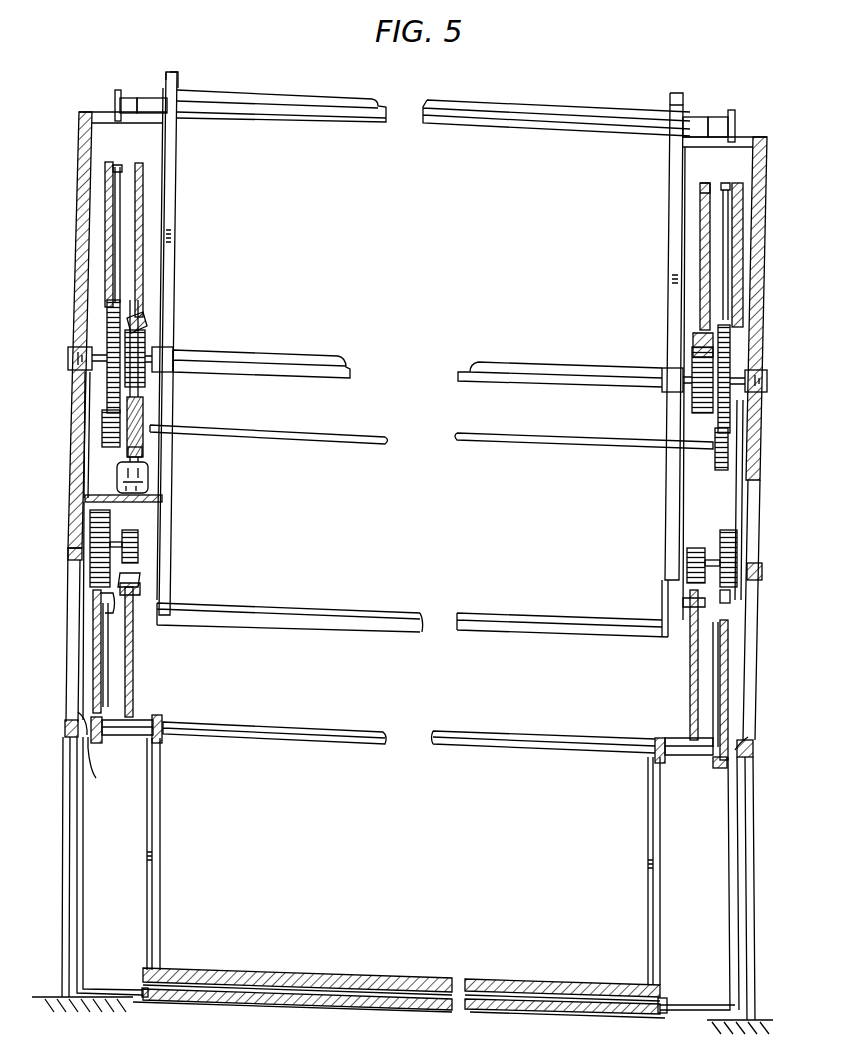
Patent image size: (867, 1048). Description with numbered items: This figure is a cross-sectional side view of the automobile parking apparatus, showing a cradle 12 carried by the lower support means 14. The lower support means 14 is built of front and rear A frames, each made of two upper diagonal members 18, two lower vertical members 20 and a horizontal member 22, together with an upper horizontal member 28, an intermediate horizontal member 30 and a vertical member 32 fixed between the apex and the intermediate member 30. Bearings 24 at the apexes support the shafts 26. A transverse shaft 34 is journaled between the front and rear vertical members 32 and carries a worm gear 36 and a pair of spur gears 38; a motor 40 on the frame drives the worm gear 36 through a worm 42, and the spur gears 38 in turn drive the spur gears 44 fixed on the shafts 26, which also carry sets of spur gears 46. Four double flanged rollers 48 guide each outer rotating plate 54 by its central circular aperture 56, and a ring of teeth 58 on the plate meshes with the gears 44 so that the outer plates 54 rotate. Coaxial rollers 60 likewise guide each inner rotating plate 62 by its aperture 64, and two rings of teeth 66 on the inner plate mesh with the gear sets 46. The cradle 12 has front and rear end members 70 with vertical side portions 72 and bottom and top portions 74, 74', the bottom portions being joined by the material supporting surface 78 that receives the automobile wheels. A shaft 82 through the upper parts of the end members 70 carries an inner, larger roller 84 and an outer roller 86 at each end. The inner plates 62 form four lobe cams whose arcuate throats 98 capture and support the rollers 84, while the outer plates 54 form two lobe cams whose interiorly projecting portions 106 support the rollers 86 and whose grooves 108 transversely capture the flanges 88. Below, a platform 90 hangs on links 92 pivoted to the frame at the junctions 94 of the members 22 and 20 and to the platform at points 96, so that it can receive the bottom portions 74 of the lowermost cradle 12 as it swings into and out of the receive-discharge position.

The cradle 12 is at (291, 81).
The lower support means 14 is at (49, 776).
The upper diagonal member 18 is at (70, 679).
The lower vertical member 20 is at (62, 828).
The horizontal member 22 is at (65, 733).
The bearing 24 is at (68, 359).
The shaft 26 is at (100, 350).
The upper horizontal member 28 is at (88, 505).
The intermediate horizontal member 30 is at (70, 556).
The vertical member 32 is at (80, 502).
The transverse shaft 34 is at (206, 435).
The worm gear 36 is at (145, 402).
The spur gear 38 is at (105, 448).
The motor 40 is at (117, 479).
The worm 42 is at (143, 447).
The spur gear 44 is at (108, 323).
The set of spur gears 46 is at (147, 353).
The flanged roller 48 is at (100, 577).
The outer rotating plate 54 is at (742, 237).
The central circular aperture 56 is at (100, 592).
The teeth 58 is at (110, 303).
The double flanged roller 60 is at (140, 538).
The inner rotating plate 62 is at (133, 630).
The central circular aperture 64 is at (135, 575).
The teeth 66 is at (135, 323).
The end member 70 is at (162, 79).
The vertical side portion 72 is at (178, 221).
The bottom portion 74 is at (401, 967).
The top portion 74' is at (408, 738).
The material supporting surface 78 is at (541, 354).
The shaft 82 is at (383, 120).
The roller 84 is at (162, 112).
The roller 86 is at (128, 97).
The flange 88 is at (115, 98).
The platform 90 is at (372, 1000).
The link 92 is at (84, 838).
The junction 94 is at (80, 716).
The pivot point 96 is at (145, 995).
The arcuate throat 98 is at (700, 208).
The interiorly projecting portion 106 is at (108, 655).
The groove 108 is at (117, 167).